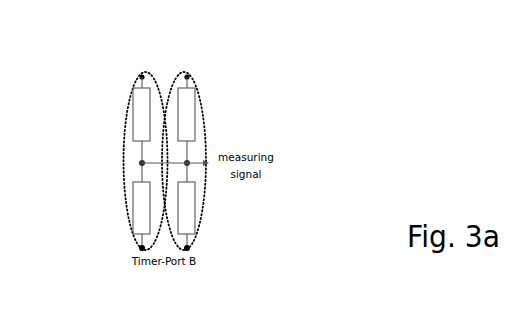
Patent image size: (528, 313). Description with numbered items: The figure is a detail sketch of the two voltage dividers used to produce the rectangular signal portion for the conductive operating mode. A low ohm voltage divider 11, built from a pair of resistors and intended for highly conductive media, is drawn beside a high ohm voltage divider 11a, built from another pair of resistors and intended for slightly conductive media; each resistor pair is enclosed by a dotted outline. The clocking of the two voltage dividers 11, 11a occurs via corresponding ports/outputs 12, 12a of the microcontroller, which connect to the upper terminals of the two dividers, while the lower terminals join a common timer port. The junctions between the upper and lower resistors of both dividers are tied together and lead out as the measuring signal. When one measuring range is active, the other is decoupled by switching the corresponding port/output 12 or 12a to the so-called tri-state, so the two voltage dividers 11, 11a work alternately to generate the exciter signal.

The low ohm voltage divider 11 is at (121, 147).
The high ohm voltage divider 11a is at (206, 125).
The port/output of the microcontroller 12 is at (136, 78).
The port/output of the microcontroller 12a is at (198, 67).